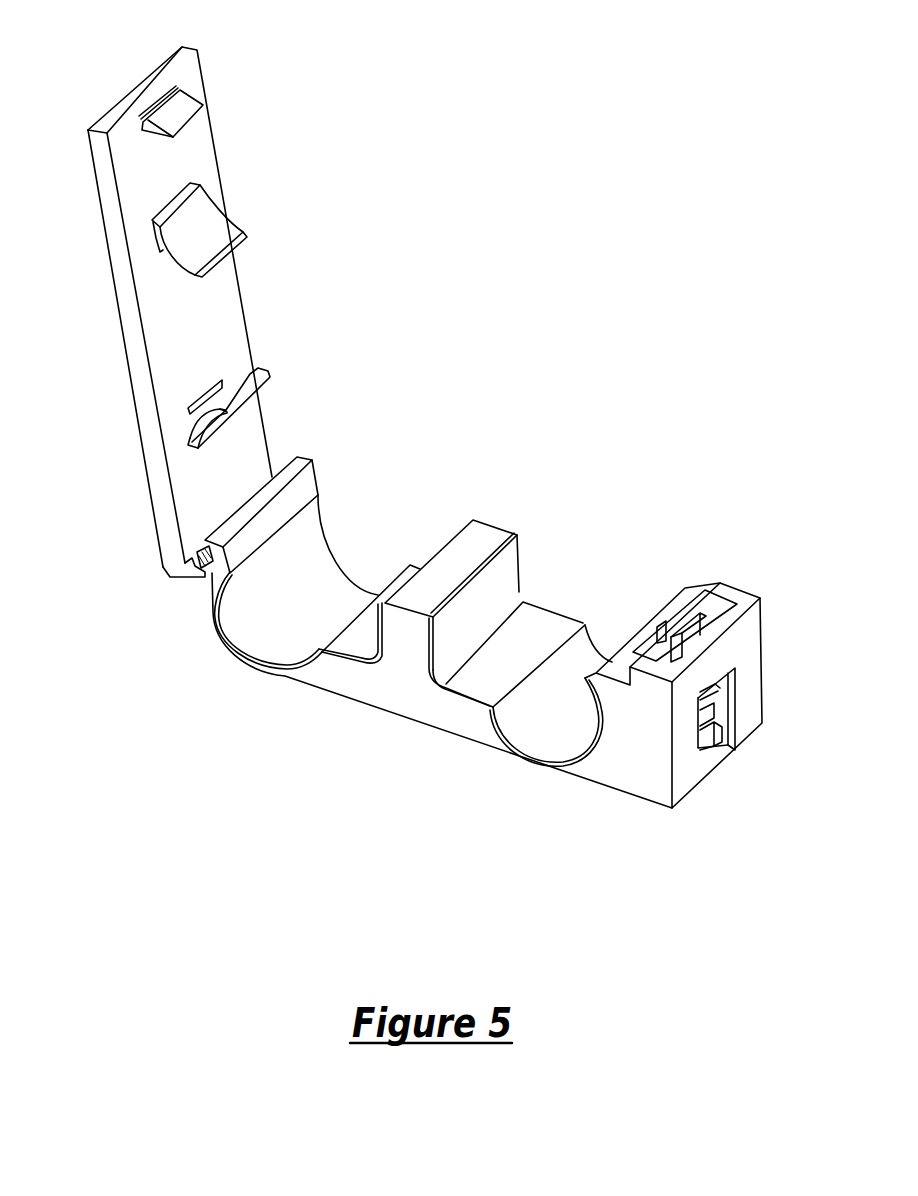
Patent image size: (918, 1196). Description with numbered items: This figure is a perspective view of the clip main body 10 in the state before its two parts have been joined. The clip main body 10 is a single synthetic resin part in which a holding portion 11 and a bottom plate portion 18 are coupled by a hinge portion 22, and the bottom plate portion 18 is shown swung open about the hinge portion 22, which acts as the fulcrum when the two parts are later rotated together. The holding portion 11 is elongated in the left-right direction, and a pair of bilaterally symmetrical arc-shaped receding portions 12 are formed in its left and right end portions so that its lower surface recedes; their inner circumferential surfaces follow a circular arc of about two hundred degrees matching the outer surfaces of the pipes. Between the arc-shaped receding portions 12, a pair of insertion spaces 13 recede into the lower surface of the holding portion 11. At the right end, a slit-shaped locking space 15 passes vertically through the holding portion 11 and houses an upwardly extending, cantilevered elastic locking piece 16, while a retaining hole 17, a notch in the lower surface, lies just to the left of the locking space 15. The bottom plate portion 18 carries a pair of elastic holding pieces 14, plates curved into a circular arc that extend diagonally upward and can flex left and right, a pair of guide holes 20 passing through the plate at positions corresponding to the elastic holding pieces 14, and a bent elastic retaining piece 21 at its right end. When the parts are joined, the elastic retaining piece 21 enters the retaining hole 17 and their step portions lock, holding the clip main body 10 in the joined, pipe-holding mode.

The clip main body 10 is at (541, 88).
The holding portion 11 is at (477, 545).
The arc-shaped receding portion 12 is at (278, 632).
The insertion space 13 is at (370, 637).
The elastic holding piece 14 is at (217, 238).
The locking space 15 is at (718, 612).
The elastic locking piece 16 is at (712, 698).
The retaining hole 17 is at (650, 642).
The bottom plate portion 18 is at (156, 328).
The guide hole 20 is at (202, 387).
The elastic retaining piece 21 is at (190, 119).
The hinge portion 22 is at (203, 578).